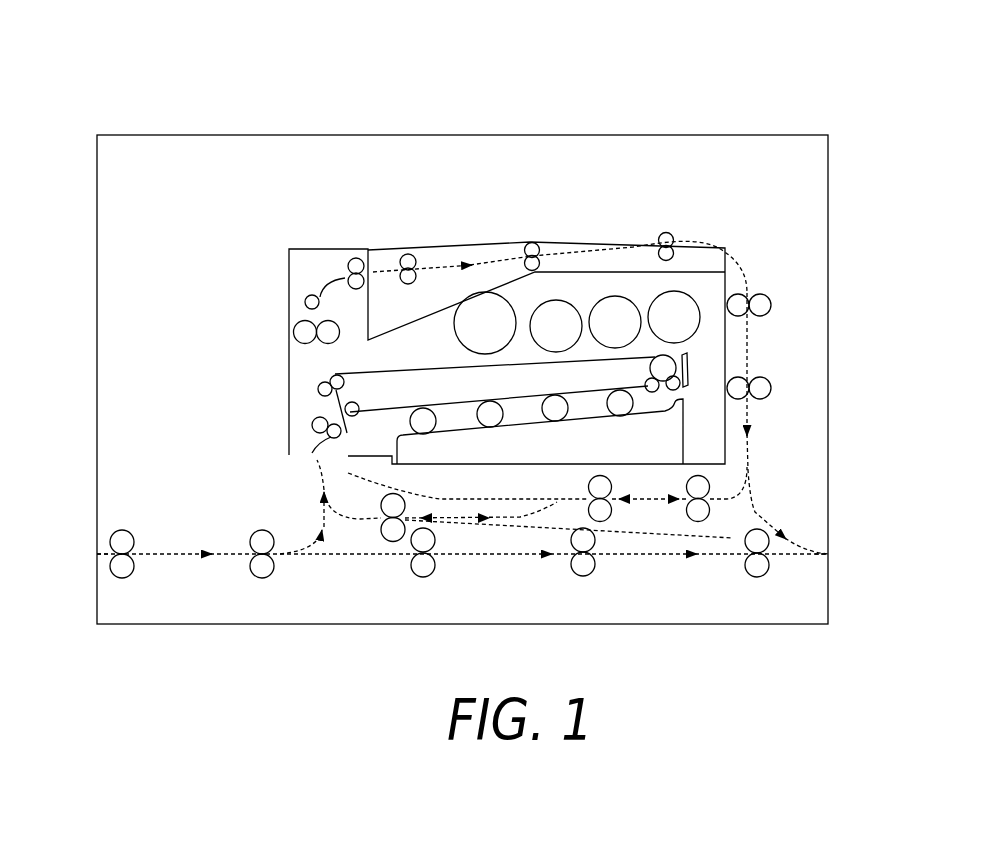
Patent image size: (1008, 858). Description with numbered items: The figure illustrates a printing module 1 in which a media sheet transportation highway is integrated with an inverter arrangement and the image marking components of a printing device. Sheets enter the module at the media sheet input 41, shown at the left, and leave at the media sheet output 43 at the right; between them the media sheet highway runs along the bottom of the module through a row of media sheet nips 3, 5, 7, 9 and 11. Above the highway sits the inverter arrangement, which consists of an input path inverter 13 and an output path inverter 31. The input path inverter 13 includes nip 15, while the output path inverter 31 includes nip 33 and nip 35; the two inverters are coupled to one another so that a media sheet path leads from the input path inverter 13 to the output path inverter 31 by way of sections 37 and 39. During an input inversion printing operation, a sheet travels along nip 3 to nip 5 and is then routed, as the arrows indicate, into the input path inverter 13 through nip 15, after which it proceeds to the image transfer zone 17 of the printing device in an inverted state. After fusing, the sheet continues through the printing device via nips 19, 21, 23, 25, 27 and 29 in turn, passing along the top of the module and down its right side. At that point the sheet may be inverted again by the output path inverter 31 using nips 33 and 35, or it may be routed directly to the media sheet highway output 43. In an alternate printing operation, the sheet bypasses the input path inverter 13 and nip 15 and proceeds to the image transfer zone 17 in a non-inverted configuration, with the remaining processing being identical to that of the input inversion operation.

The printing module 1 is at (302, 94).
The media sheet nip 3 is at (122, 578).
The media sheet nip 5 is at (262, 578).
The media sheet nip 7 is at (423, 577).
The media sheet nip 9 is at (583, 576).
The media sheet nip 11 is at (757, 577).
The input path inverter 13 is at (300, 508).
The nip 15 is at (395, 542).
The image transfer zone 17 is at (308, 380).
The nip 19 is at (349, 264).
The nip 21 is at (406, 254).
The nip 23 is at (531, 242).
The nip 25 is at (665, 232).
The nip 27 is at (772, 303).
The nip 29 is at (772, 387).
The output path inverter 31 is at (763, 498).
The nip 33 is at (703, 521).
The nip 35 is at (610, 513).
The section 37 is at (561, 494).
The section 39 is at (503, 523).
The media sheet input 41 is at (92, 558).
The media sheet output 43 is at (838, 557).